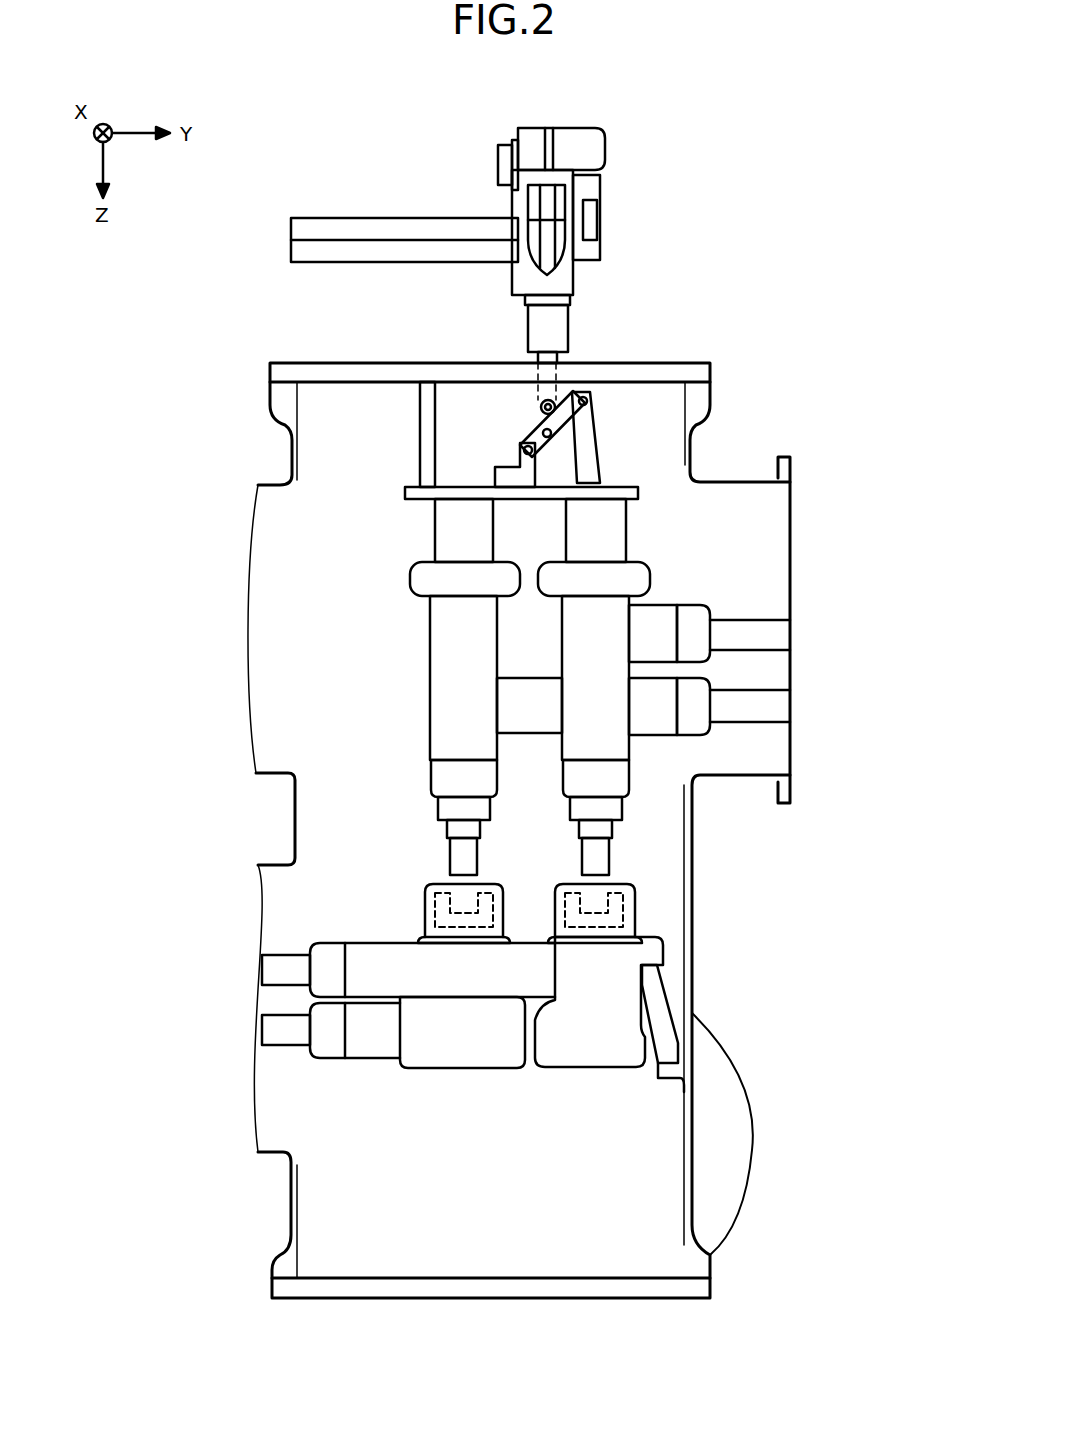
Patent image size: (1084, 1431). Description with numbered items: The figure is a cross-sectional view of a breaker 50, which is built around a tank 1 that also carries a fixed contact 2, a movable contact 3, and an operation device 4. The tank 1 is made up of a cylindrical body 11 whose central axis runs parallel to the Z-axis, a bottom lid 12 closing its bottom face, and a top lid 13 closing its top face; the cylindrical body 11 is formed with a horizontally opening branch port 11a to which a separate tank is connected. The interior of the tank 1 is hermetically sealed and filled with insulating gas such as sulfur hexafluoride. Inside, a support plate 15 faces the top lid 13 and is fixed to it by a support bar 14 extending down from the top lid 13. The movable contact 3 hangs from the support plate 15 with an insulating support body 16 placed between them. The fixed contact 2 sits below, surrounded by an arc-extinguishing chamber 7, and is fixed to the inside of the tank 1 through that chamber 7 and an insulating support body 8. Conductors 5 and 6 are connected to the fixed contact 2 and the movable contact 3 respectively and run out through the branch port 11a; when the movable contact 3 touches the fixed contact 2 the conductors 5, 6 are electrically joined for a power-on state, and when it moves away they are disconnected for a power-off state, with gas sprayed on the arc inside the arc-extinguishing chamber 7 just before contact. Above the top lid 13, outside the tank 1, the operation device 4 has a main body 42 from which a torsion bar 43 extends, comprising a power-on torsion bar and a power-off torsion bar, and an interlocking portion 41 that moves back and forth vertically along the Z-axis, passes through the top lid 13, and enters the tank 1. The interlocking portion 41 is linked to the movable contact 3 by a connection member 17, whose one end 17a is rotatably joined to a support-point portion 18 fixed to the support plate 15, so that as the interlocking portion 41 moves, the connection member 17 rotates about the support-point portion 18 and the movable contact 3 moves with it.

The tank 1 is at (778, 396).
The breaker 50 is at (684, 133).
The operation device 4 is at (577, 118).
The main body 42 is at (606, 151).
The interlocking portion 41 is at (550, 383).
The torsion bar 43 is at (345, 226).
The cylindrical body 11 is at (292, 820).
The branch port 11a is at (763, 772).
The bottom lid 12 is at (432, 1288).
The top lid 13 is at (700, 366).
The support bar 14 is at (428, 443).
The support plate 15 is at (412, 492).
The insulating support body 16 is at (475, 545).
The connection member 17 is at (575, 430).
The one end 17a is at (538, 422).
The support-point portion 18 is at (508, 472).
The conductor 6 is at (782, 633).
The movable contact 3 is at (607, 858).
The fixed contact 2 is at (627, 903).
The conductor 5 is at (282, 965).
The arc-extinguishing chamber 7 is at (564, 1058).
The insulating support body 8 is at (656, 995).